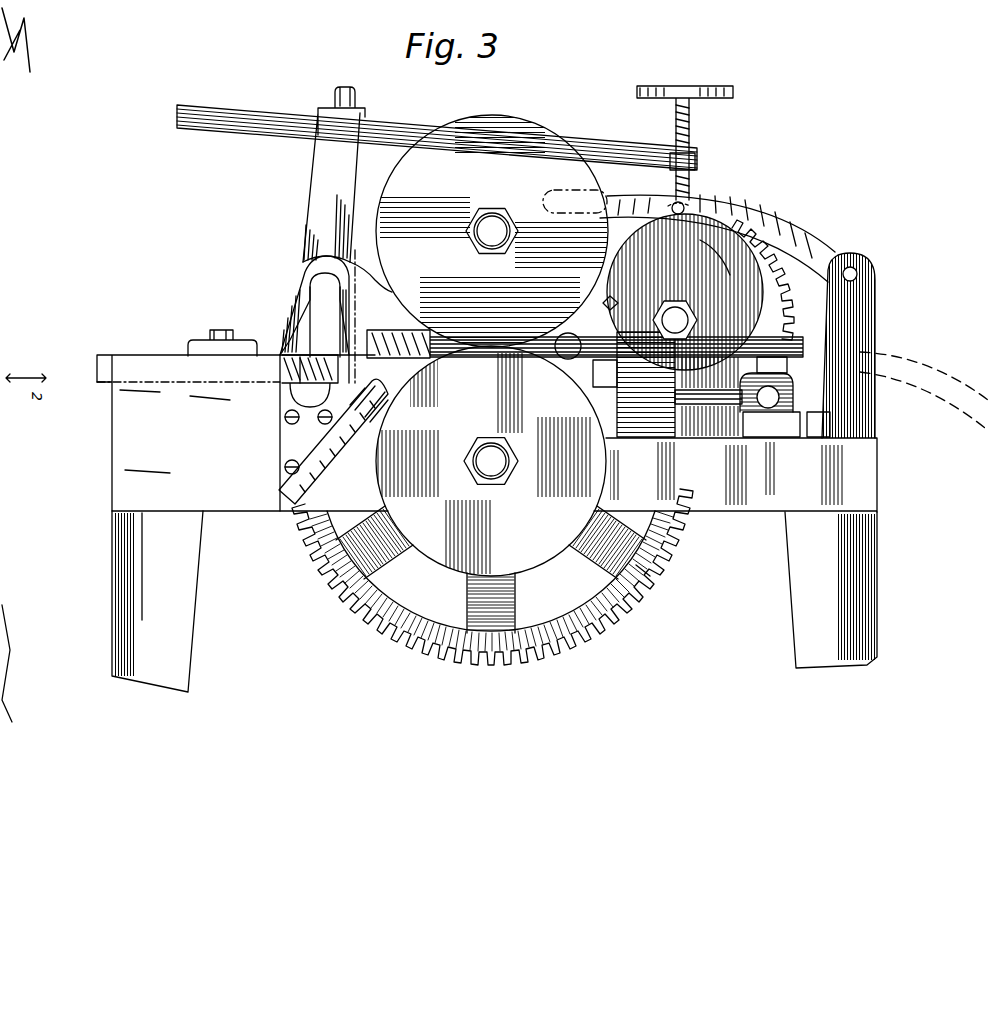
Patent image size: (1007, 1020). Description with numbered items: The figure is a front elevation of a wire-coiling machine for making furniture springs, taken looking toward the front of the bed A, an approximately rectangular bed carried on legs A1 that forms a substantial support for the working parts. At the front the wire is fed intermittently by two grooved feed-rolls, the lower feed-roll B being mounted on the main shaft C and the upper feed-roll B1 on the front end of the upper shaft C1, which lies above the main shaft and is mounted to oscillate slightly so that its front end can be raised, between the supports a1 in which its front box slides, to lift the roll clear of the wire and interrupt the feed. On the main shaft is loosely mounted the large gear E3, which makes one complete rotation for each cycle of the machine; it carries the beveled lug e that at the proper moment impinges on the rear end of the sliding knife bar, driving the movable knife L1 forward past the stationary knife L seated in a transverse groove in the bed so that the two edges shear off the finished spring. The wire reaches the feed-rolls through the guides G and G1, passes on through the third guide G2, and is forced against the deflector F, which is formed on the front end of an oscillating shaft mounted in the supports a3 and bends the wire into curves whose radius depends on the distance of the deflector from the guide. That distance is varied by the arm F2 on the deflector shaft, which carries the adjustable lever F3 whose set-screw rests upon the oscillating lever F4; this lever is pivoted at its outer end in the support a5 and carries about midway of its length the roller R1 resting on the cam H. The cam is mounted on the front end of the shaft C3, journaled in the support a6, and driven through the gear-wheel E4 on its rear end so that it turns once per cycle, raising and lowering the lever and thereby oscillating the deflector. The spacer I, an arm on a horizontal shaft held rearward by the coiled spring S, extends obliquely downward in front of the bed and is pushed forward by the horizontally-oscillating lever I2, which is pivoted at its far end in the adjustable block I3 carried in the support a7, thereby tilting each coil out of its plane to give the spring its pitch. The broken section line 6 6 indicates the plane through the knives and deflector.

The bed A is at (862, 487).
The legs A1 is at (855, 594).
The lower feed-roll B is at (490, 461).
The upper feed-roll B1 is at (492, 231).
The main shaft C is at (487, 467).
The upper feed-roll shaft C1 is at (487, 227).
The cam shaft C3 is at (683, 322).
The large gear E3 is at (556, 633).
The gear-wheel E4 is at (688, 438).
The beveled lug e is at (645, 575).
The deflector F is at (317, 327).
The arm F2 is at (326, 180).
The lever F3 is at (597, 146).
The oscillating lever F4 is at (748, 228).
The wire-guide G is at (700, 292).
The wire-guide G1 is at (612, 303).
The wire-guide G2 is at (372, 332).
The cam H is at (717, 262).
The spacer I is at (320, 373).
The horizontally-oscillating lever I2 is at (707, 438).
The adjustable block I3 is at (778, 392).
The stationary knife L is at (314, 441).
The sliding knife L1 is at (290, 397).
The roller R1 is at (693, 200).
The coiled spring S is at (693, 137).
The supports a1 is at (568, 333).
The supports a3 is at (307, 265).
The support a5 is at (852, 340).
The support a6 is at (755, 365).
The support a7 is at (780, 399).
The section line 6 6 is at (262, 537).